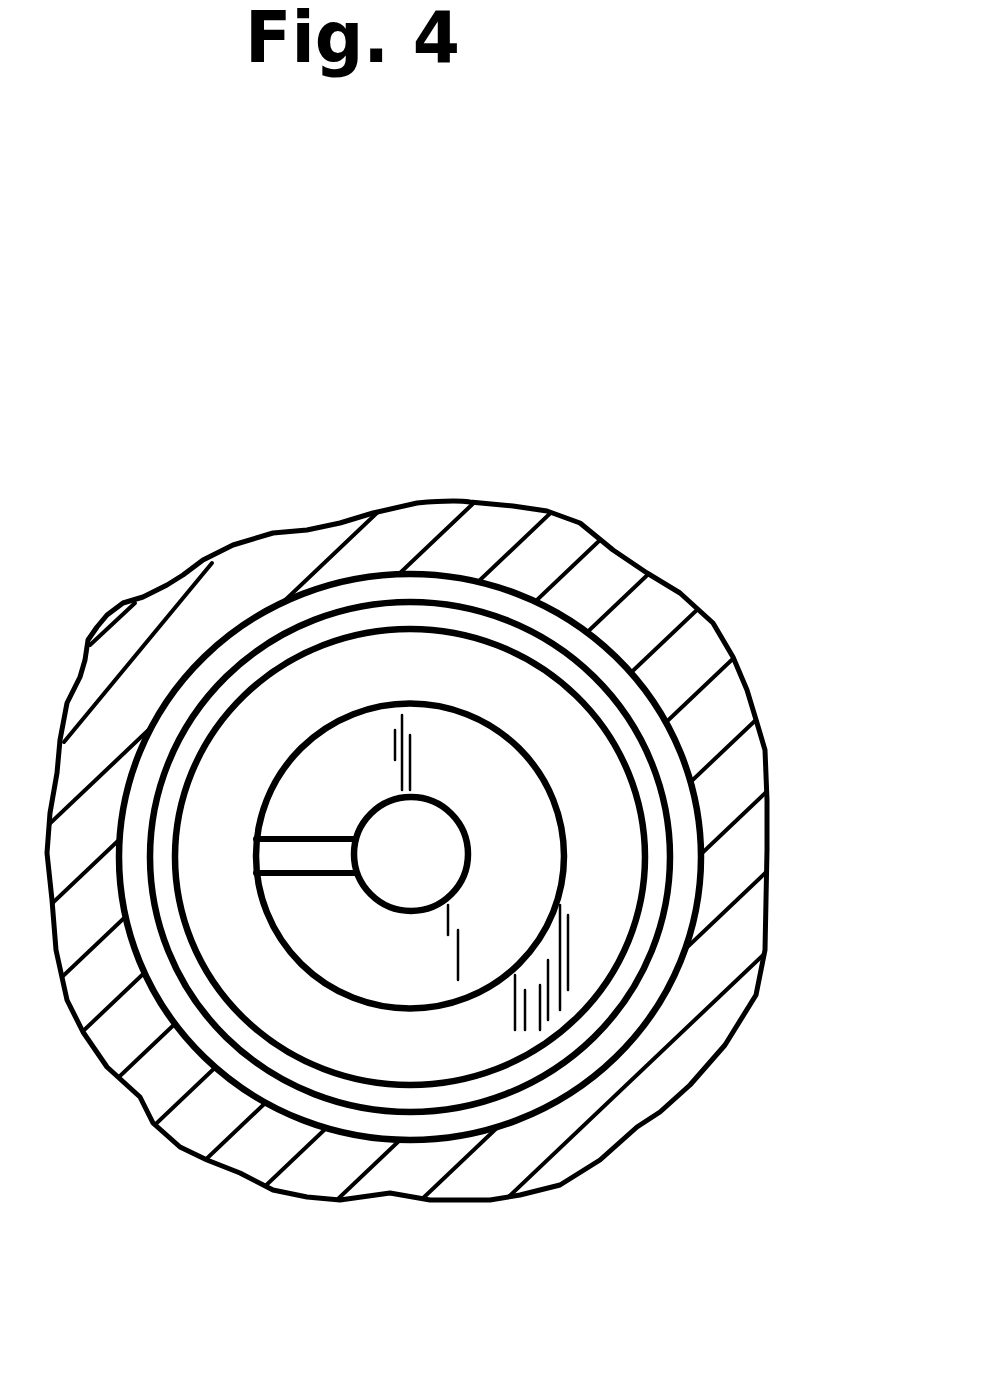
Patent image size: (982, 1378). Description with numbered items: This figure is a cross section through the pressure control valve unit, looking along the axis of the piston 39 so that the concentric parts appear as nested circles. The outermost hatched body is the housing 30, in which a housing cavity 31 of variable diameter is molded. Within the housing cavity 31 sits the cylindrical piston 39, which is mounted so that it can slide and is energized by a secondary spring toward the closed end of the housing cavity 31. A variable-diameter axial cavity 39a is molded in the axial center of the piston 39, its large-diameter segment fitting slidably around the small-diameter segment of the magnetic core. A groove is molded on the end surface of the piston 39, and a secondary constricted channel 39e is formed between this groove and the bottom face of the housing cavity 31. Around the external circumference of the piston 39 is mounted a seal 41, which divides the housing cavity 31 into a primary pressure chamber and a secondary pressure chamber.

The housing 30 is at (652, 594).
The housing cavity 31 is at (538, 1103).
The piston 39 is at (640, 808).
The axial cavity 39a is at (386, 897).
The secondary constricted channel 39e is at (309, 853).
The seal 41 is at (683, 893).